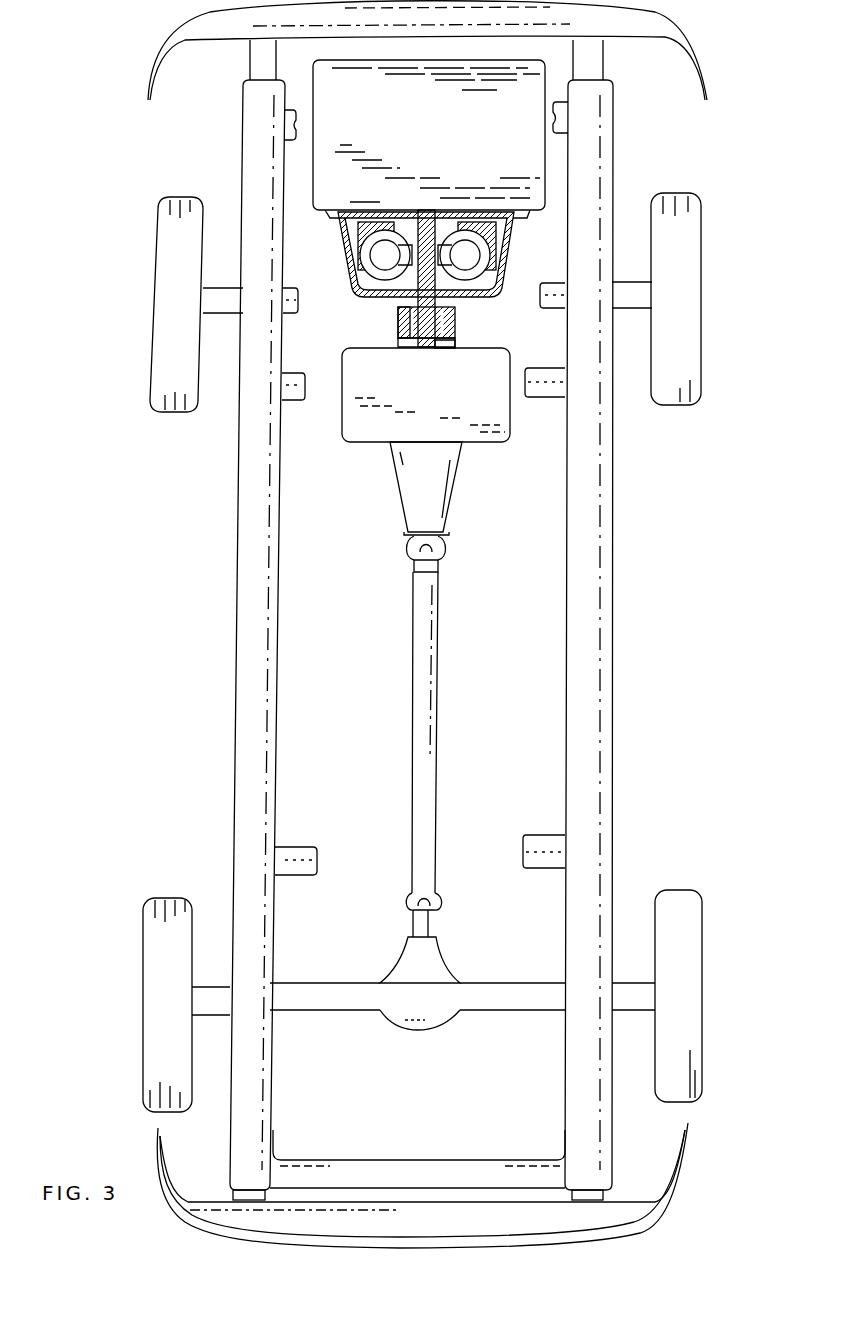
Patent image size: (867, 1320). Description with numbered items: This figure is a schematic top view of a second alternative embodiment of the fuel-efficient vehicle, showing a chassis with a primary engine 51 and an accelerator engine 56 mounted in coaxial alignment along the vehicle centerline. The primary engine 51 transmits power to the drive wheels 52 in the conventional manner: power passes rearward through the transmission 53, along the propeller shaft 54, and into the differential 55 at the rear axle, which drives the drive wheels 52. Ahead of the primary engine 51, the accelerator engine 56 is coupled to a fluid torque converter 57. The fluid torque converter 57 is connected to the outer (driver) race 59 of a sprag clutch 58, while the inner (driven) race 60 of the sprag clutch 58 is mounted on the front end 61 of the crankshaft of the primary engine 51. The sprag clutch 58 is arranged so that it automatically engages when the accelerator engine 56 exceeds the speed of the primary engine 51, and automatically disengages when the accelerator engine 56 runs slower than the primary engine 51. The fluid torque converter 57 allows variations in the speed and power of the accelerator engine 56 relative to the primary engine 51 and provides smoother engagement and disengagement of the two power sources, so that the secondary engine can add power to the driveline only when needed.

The primary engine 51 is at (443, 404).
The drive wheels 52 is at (143, 955).
The transmission 53 is at (437, 492).
The propeller shaft 54 is at (448, 737).
The differential 55 is at (430, 1000).
The accelerator engine 56 is at (443, 137).
The fluid torque converter 57 is at (496, 277).
The sprag clutch 58 is at (466, 330).
The outer (driver) race 59 is at (398, 318).
The inner (driven) race 60 is at (410, 343).
The front end of the crankshaft 61 is at (445, 345).